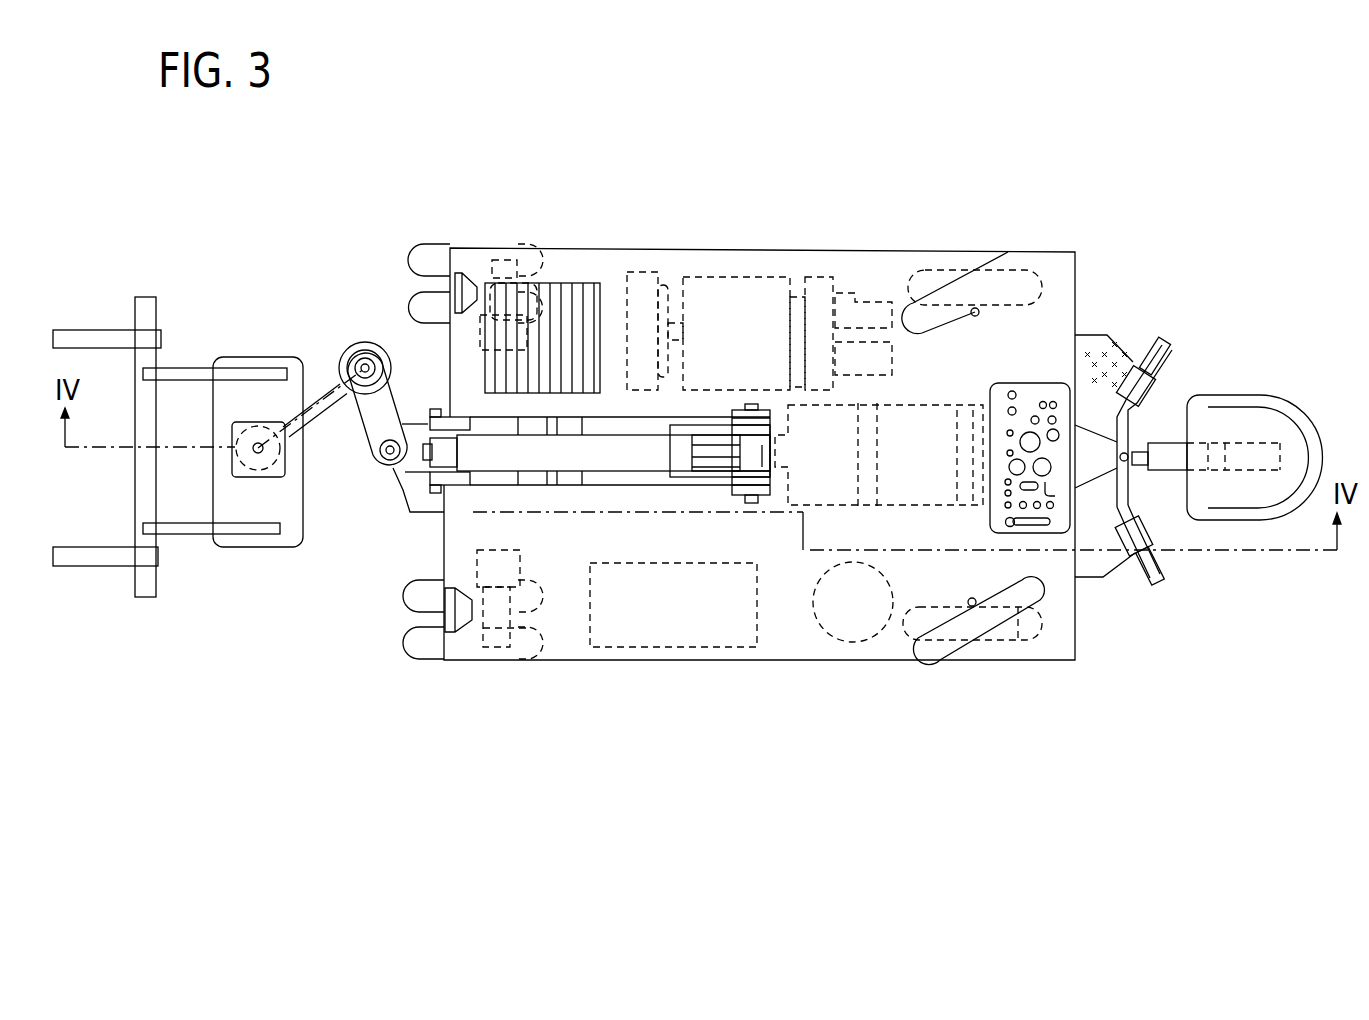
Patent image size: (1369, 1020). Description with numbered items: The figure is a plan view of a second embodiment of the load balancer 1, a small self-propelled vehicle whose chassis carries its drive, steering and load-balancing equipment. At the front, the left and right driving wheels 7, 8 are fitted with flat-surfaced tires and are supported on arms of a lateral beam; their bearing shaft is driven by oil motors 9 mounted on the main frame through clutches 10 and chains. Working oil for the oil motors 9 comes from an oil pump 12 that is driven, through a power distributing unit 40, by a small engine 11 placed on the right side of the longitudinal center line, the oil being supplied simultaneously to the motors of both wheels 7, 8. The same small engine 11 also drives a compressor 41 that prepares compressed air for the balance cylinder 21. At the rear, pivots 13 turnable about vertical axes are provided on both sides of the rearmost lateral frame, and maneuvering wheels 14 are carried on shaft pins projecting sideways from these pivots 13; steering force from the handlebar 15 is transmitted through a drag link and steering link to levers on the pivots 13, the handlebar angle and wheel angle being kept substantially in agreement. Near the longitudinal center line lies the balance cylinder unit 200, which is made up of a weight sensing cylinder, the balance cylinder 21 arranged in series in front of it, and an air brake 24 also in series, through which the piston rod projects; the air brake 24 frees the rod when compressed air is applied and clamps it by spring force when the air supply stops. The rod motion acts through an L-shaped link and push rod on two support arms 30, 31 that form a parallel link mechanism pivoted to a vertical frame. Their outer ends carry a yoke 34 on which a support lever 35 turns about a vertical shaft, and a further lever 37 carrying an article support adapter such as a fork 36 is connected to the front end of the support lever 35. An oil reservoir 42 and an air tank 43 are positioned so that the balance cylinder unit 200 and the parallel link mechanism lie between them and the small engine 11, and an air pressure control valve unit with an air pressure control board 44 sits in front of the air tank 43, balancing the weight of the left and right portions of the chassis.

The load balancer 1 is at (932, 232).
The left driving wheel 7 is at (410, 250).
The right driving wheel 8 is at (403, 638).
The oil motor 9 is at (503, 258).
The clutch 10 is at (480, 333).
The small engine 11 is at (762, 283).
The oil pump 12 is at (868, 307).
The pivot 13 is at (975, 312).
The maneuvering wheel 14 is at (1018, 605).
The handlebar 15 is at (1160, 357).
The balance cylinder 21 is at (918, 505).
The air brake 24 is at (825, 503).
The support arm 30 is at (613, 440).
The support arm 31 is at (372, 447).
The yoke 34 is at (408, 473).
The support lever 35 is at (392, 348).
The fork 36 is at (237, 547).
The lever 37 is at (330, 373).
The power distributing unit 40 is at (818, 283).
The compressor 41 is at (892, 362).
The oil reservoir 42 is at (1063, 643).
The air tank 43 is at (845, 632).
The air pressure control board 44 is at (647, 645).
The balance cylinder unit 200 is at (953, 403).